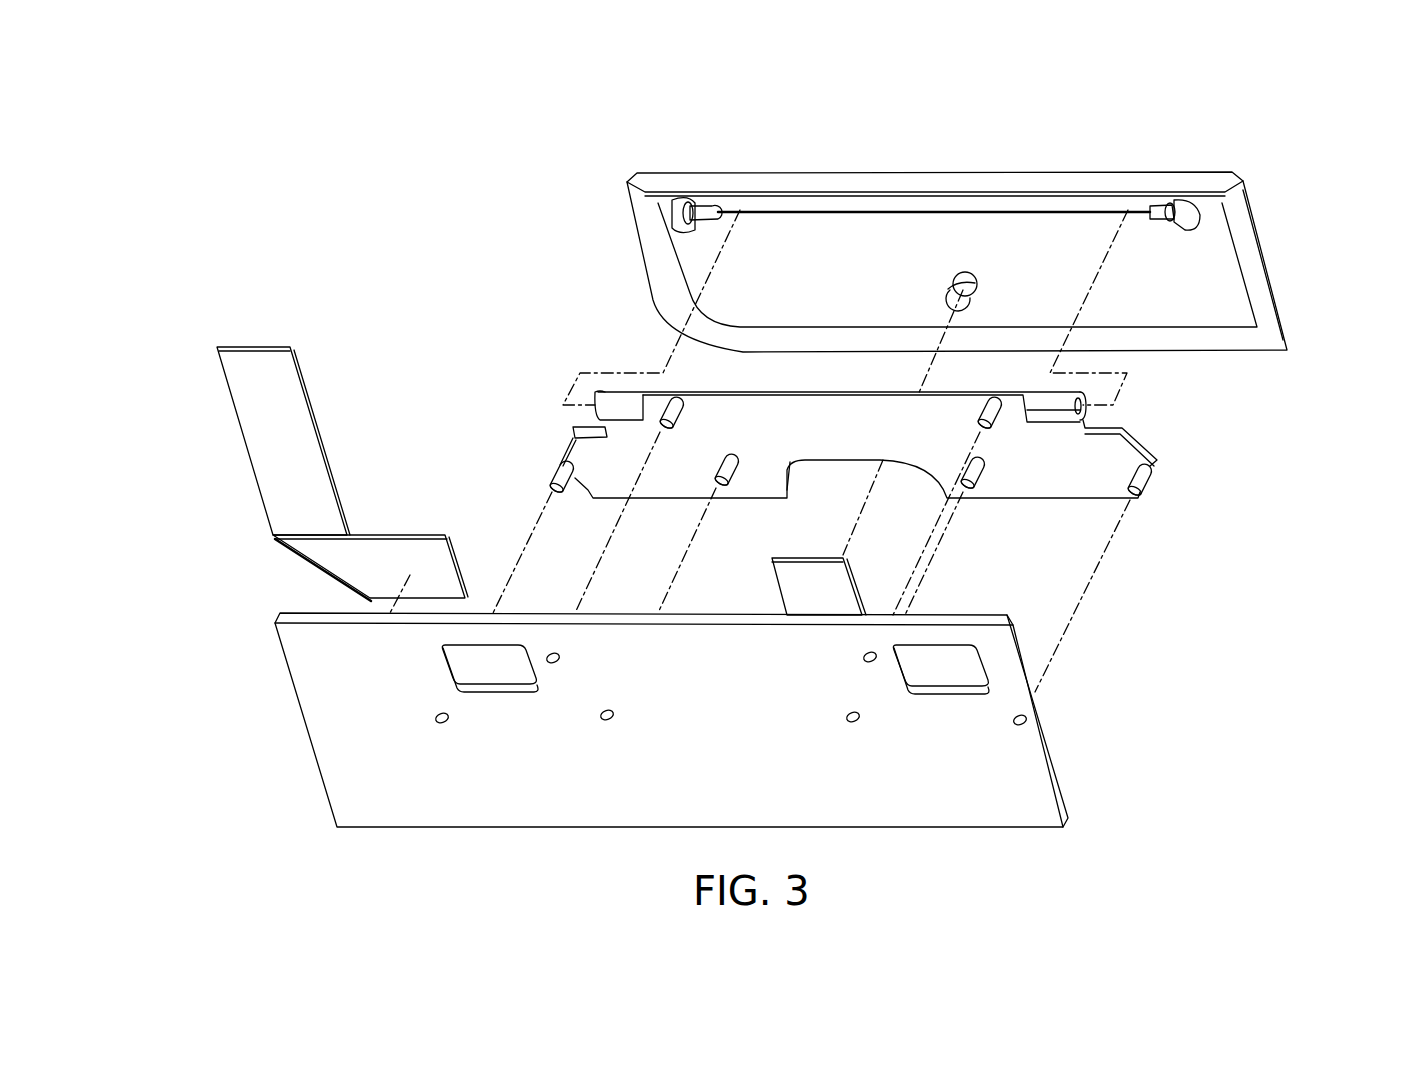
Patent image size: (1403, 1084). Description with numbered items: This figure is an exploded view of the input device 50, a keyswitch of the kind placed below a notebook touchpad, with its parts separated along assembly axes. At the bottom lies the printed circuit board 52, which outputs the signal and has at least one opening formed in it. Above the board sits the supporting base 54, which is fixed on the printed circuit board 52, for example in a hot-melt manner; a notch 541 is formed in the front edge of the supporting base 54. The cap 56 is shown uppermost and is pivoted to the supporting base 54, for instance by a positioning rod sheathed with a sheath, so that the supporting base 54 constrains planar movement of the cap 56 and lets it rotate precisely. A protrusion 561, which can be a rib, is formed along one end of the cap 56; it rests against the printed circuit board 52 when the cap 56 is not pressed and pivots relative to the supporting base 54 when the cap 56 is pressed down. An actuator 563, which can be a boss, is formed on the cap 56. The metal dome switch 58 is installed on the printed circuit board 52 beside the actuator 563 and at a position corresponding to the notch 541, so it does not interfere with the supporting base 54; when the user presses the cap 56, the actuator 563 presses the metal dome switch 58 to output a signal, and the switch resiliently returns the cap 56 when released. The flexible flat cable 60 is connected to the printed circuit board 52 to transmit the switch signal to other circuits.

The input device 50 is at (453, 218).
The printed circuit board 52 is at (718, 705).
The supporting base 54 is at (896, 466).
The notch 541 is at (815, 495).
The cap 56 is at (989, 240).
The protrusion 561 is at (1207, 186).
The actuator 563 is at (976, 270).
The metal dome switch 58 is at (852, 580).
The flexible flat cable 60 is at (292, 402).